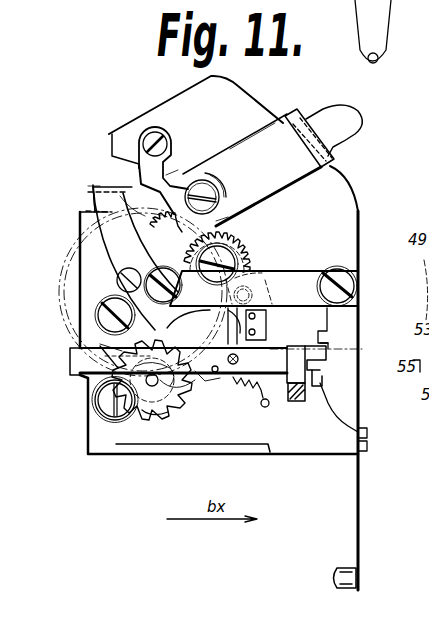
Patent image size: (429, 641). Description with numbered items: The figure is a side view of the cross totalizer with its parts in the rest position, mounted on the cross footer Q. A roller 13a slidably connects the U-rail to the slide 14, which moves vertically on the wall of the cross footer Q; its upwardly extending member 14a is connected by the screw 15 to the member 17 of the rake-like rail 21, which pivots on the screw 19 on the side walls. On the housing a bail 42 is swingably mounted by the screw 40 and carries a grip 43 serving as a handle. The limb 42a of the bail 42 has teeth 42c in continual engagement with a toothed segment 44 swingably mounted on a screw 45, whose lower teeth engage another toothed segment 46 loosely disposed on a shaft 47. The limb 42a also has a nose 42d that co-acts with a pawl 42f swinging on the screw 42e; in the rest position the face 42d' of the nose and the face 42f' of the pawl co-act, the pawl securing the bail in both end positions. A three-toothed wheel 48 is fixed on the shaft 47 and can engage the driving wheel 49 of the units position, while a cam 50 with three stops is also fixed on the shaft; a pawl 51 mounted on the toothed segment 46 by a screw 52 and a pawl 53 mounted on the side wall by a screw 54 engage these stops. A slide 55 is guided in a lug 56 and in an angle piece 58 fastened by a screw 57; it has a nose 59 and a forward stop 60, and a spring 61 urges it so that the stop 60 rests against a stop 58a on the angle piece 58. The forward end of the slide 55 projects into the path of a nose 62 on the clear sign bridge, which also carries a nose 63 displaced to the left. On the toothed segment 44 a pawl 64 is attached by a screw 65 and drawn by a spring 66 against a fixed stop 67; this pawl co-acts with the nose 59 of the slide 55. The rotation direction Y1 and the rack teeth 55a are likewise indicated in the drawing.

The cross footer Q is at (343, 191).
The roller 13a is at (345, 569).
The slide 14 is at (356, 498).
The upwardly extending member 14a is at (352, 320).
The screw 15 is at (345, 286).
The member 17 is at (317, 253).
The screw 19 is at (124, 277).
The rake-like rail 21 is at (118, 186).
The screw 40 is at (210, 197).
The bail 42 is at (284, 126).
The limb 42a is at (241, 157).
The teeth 42c is at (112, 190).
The nose 42d is at (203, 190).
The face 42d' is at (246, 213).
The screw 42e is at (166, 137).
The pawl 42f is at (129, 174).
The face 42f' is at (78, 189).
The grip 43 is at (352, 124).
The toothed segment 44 is at (233, 267).
The screw 45 is at (235, 258).
The toothed segment 46 is at (158, 408).
The shaft 47 is at (180, 405).
The three-toothed wheel 48 is at (132, 348).
The driving wheel 49 is at (63, 274).
The cam 50 is at (115, 411).
The pawl 51 is at (104, 420).
The screw 52 is at (100, 404).
The pawl 53 is at (128, 357).
The screw 54 is at (128, 320).
The slide 55 is at (72, 360).
The rack teeth 55a is at (210, 385).
The lug 56 is at (78, 349).
The screw 57 is at (297, 403).
The angle piece 58 is at (310, 351).
The stop 58a is at (305, 380).
The nose 59 is at (213, 341).
The stop 60 is at (292, 360).
The spring 61 is at (240, 381).
The nose 62 is at (322, 341).
The nose 63 is at (323, 374).
The pawl 64 is at (256, 317).
The screw 65 is at (250, 298).
The spring 66 is at (262, 321).
The fixed stop 67 is at (256, 332).
The rotation direction Y1 is at (159, 270).